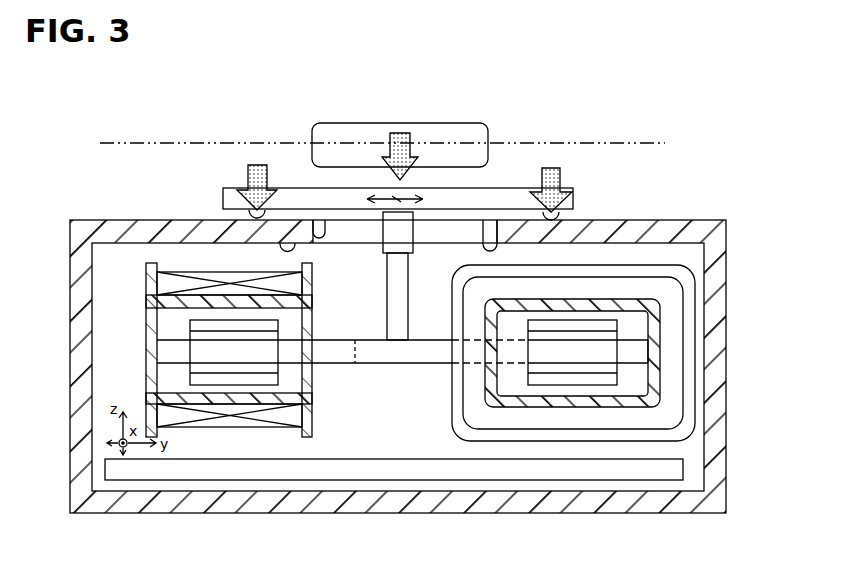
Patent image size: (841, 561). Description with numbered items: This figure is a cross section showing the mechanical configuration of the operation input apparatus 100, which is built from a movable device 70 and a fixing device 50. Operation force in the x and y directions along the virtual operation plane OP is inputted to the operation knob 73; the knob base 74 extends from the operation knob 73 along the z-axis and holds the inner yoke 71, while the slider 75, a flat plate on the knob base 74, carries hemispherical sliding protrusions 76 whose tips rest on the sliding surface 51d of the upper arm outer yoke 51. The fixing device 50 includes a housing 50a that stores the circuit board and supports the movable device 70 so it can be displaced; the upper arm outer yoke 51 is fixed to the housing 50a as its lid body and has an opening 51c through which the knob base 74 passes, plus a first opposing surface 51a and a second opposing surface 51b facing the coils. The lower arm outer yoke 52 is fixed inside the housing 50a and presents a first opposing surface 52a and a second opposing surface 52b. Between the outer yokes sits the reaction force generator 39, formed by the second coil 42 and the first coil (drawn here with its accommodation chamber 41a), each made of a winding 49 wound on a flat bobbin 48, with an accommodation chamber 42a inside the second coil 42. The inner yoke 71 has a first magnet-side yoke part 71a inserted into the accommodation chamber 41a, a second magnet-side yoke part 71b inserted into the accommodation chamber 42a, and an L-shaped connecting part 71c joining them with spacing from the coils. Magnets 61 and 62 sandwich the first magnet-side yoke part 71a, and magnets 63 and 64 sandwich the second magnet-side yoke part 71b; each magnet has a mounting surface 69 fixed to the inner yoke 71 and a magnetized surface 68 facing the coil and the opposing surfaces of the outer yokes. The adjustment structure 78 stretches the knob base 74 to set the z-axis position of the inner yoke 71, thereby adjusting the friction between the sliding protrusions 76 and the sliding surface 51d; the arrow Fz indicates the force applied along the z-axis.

The reaction force generator 39 is at (692, 262).
The accommodation chamber 41a is at (643, 300).
The second coil 42 is at (419, 307).
The accommodation chamber 42a is at (72, 222).
The bobbin 48 is at (308, 426).
The winding 49 is at (450, 307).
The fixing device 50 is at (379, 307).
The housing 50a is at (379, 307).
The upper arm outer yoke 51 is at (90, 219).
The first opposing surface 51a is at (486, 245).
The second opposing surface 51b is at (287, 243).
The opening 51c is at (314, 219).
The sliding surface 51d is at (607, 220).
The lower arm outer yoke 52 is at (404, 505).
The first opposing surface 52a is at (394, 505).
The second opposing surface 52b is at (213, 460).
The magnet 61 is at (585, 322).
The magnet 62 is at (426, 307).
The magnet 63 is at (253, 307).
The magnet 64 is at (253, 408).
The magnetized surface 68 is at (426, 307).
The mounting surface 69 is at (397, 307).
The movable device 70 is at (368, 123).
The inner yoke 71 is at (397, 307).
The first magnet-side yoke part 71a is at (397, 307).
The second magnet-side yoke part 71b is at (394, 307).
The connecting part 71c is at (397, 307).
The operation knob 73 is at (478, 124).
The knob base 74 is at (412, 300).
The slider 75 is at (342, 198).
The sliding protrusions 76 is at (247, 212).
The adjustment structure 78 is at (382, 254).
The operation input apparatus 100 is at (652, 130).
The operation plane OP is at (138, 143).
The pressing force Fz is at (398, 133).